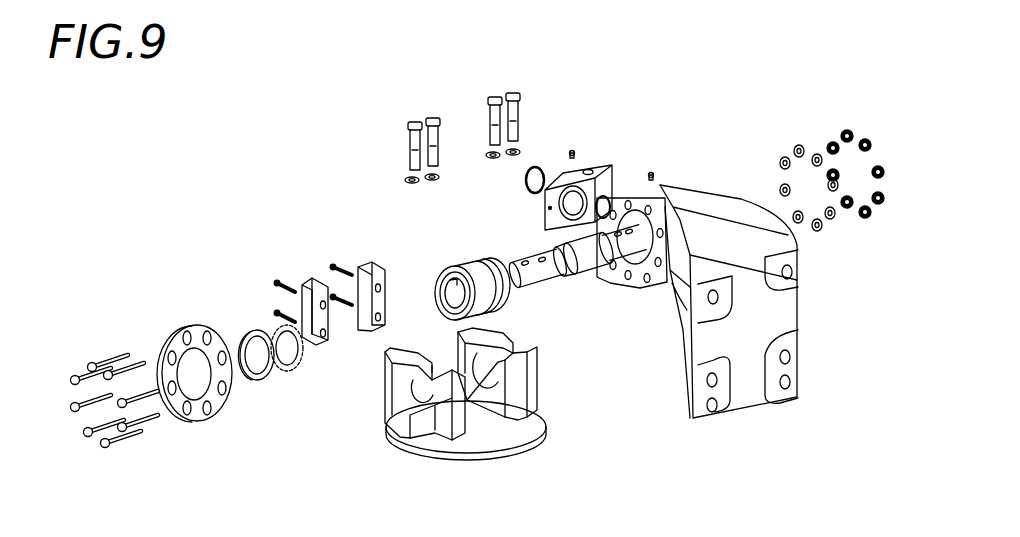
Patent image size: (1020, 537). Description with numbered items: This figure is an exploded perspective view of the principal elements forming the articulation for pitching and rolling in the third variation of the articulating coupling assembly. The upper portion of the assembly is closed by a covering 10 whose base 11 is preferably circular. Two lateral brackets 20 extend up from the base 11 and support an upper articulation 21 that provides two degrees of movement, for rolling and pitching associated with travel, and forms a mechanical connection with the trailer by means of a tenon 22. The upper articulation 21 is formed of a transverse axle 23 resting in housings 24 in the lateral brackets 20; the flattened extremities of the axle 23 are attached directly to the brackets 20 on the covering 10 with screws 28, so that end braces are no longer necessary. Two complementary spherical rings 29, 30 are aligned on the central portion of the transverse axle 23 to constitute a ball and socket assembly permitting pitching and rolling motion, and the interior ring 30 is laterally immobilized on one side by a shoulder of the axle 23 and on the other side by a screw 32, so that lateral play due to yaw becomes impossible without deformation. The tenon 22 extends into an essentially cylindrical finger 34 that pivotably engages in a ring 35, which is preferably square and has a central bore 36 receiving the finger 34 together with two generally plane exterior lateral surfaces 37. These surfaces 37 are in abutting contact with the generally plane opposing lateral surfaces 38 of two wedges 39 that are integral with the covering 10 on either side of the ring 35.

The covering 10 is at (553, 467).
The base 11 is at (480, 457).
The lateral brackets 20 is at (388, 410).
The upper articulation 21 is at (167, 167).
The tenon 22 is at (822, 277).
The transverse axle 23 is at (583, 287).
The housings 24 is at (400, 393).
The screws 28 is at (416, 105).
The spherical ring 29 is at (452, 263).
The interior ring 30 is at (446, 293).
The screw 32 is at (254, 335).
The cylindrical finger 34 is at (622, 190).
The ring 35 is at (591, 151).
The central bore 36 is at (570, 195).
The plane exterior lateral surfaces 37 is at (540, 192).
The plane lateral surfaces 38 is at (332, 290).
The wedges 39 is at (297, 307).